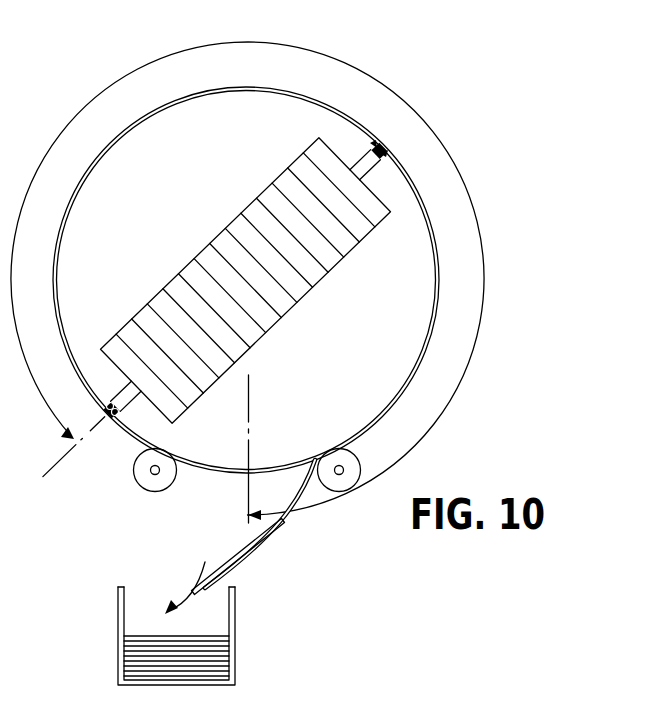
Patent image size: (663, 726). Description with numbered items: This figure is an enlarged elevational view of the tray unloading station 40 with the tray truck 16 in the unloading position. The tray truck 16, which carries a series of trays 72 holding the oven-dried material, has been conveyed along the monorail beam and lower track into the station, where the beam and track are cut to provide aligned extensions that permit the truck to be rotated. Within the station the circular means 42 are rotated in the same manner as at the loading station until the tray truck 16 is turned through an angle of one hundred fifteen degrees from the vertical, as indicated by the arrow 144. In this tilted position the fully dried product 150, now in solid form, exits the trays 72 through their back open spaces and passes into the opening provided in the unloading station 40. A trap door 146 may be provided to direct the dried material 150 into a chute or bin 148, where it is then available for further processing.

The arrow 144 is at (163, 58).
The tray unloading station 40 is at (442, 230).
The circular means 42 is at (430, 341).
The tray truck 16 is at (246, 280).
The trays 72 is at (239, 218).
The trap door 146 is at (268, 551).
The dried product 150 is at (233, 556).
The chute or bin 148 is at (235, 618).